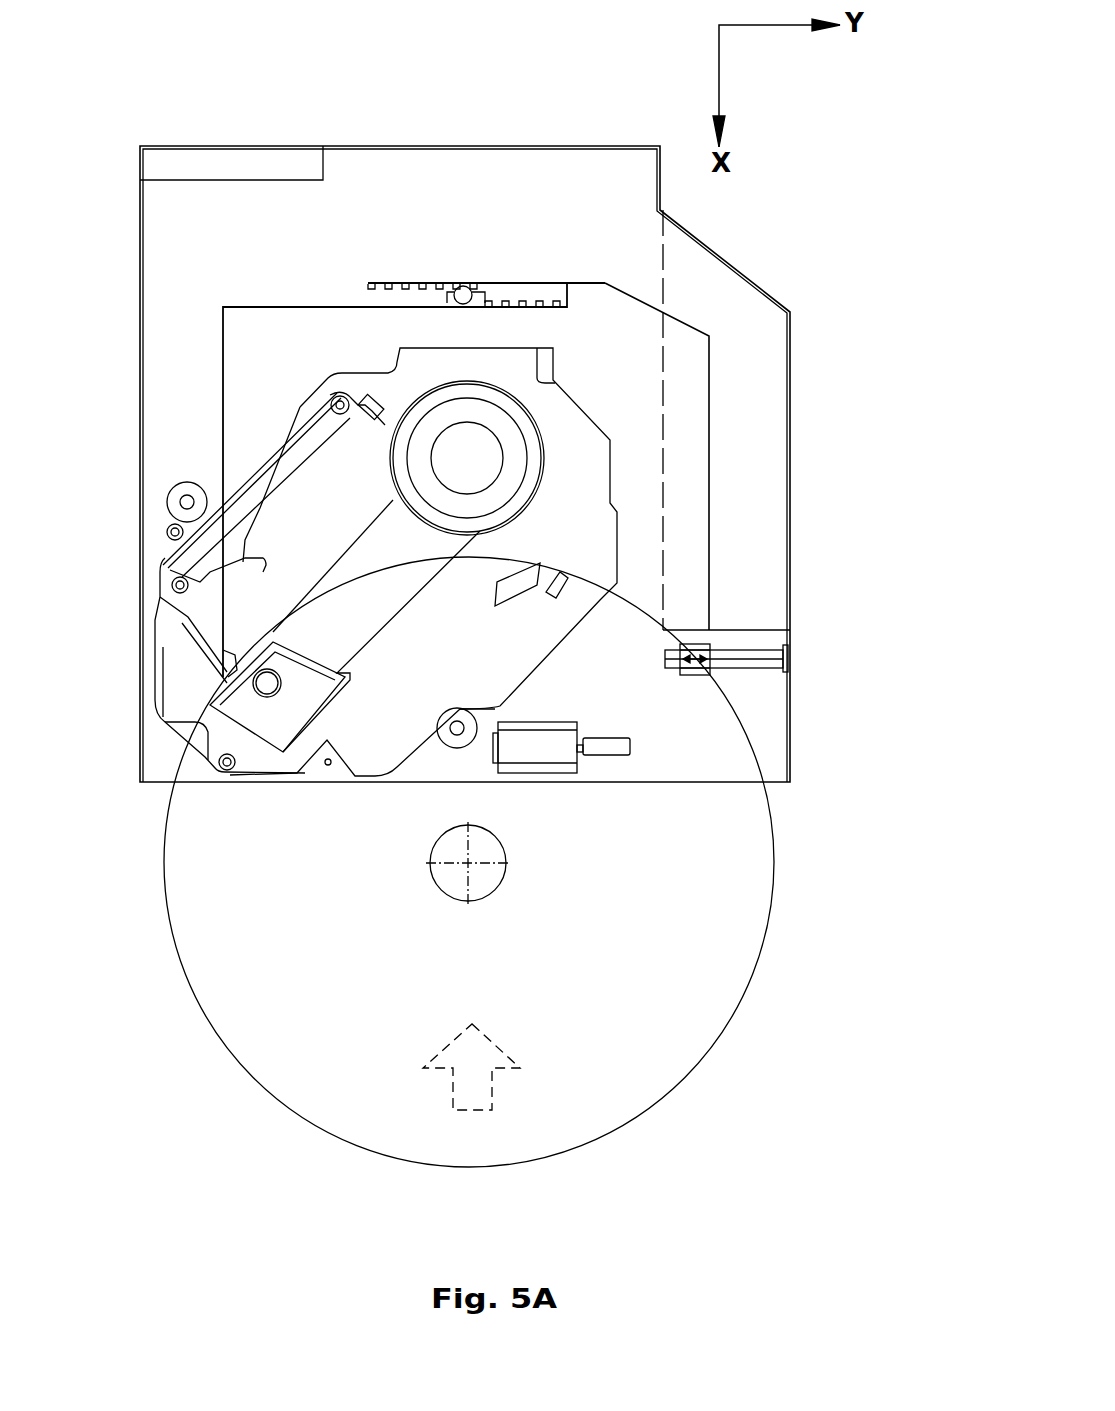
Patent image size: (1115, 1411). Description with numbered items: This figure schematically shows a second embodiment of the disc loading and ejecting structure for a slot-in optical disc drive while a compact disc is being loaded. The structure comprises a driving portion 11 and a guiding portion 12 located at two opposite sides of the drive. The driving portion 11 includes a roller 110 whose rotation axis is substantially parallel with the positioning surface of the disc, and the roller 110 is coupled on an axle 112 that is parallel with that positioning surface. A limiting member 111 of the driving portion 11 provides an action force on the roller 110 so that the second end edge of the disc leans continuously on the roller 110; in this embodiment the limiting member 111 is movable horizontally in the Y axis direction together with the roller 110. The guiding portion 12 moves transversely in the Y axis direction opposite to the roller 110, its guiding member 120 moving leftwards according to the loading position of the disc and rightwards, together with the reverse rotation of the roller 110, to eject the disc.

The driving portion 11 is at (760, 672).
The roller 110 is at (710, 630).
The limiting member 111 is at (710, 492).
The axle 112 is at (748, 660).
The guiding portion 12 is at (346, 528).
The guiding member 120 is at (222, 432).